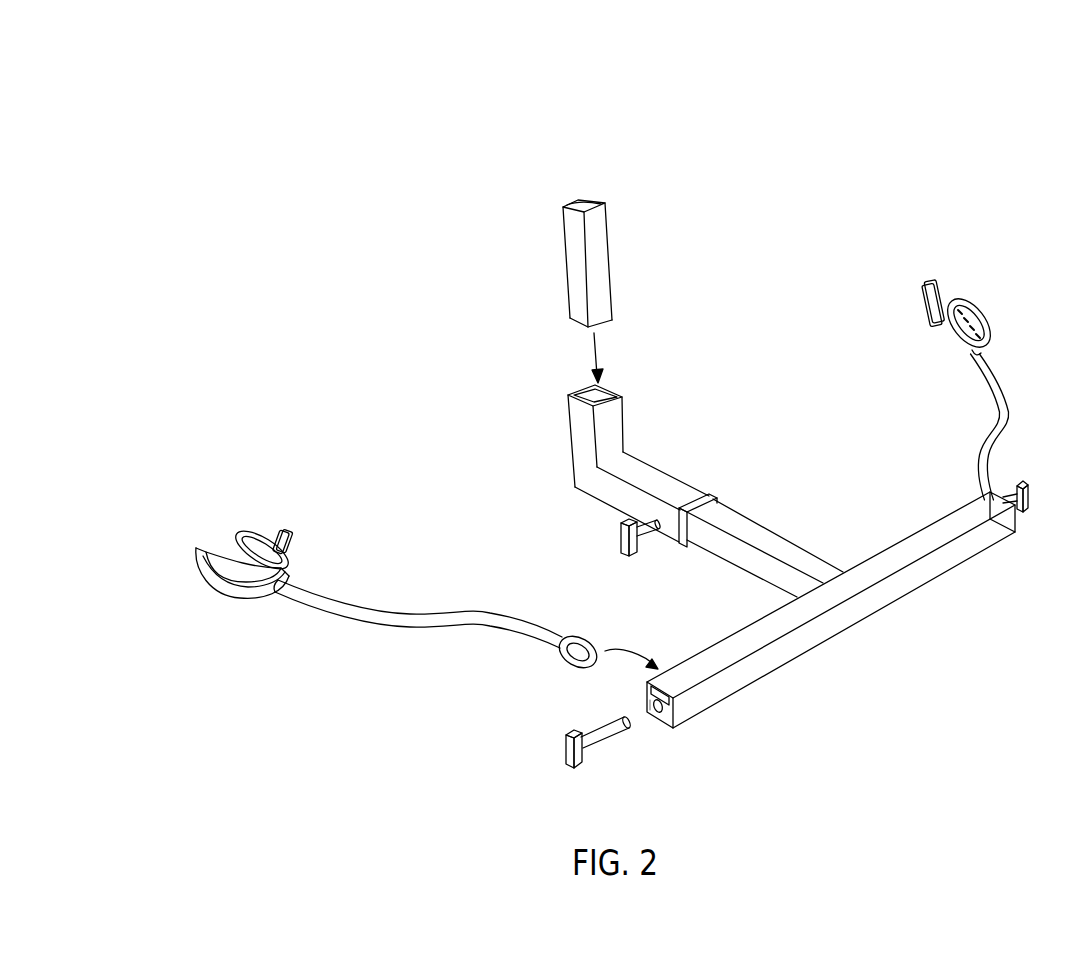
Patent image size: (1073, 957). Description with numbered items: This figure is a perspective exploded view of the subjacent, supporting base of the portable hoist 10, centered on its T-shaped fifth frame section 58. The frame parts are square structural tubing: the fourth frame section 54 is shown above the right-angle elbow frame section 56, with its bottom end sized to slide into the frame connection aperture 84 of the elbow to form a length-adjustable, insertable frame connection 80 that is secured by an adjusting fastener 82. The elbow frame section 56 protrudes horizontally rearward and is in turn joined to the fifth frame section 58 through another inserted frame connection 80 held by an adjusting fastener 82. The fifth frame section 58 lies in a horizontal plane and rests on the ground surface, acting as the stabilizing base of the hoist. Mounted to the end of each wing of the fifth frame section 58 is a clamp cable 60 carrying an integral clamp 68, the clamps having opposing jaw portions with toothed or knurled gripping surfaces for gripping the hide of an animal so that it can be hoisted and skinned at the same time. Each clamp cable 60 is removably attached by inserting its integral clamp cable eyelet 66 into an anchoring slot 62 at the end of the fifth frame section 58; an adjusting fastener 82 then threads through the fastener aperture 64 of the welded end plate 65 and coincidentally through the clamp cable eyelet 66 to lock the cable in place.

The portable hoist 10 is at (357, 189).
The fourth frame section 54 is at (572, 258).
The elbow frame section 56 is at (590, 470).
The fifth frame section 58 is at (776, 545).
The clamp cable 60 is at (478, 622).
The anchoring slot 62 is at (661, 683).
The fastener aperture 64 is at (662, 714).
The end plate 65 is at (670, 705).
The clamp cable eyelet 66 is at (572, 662).
The clamp 68 is at (245, 587).
The frame connection 80 is at (692, 502).
The adjusting fastener 82 is at (621, 540).
The frame connection aperture 84 is at (580, 391).